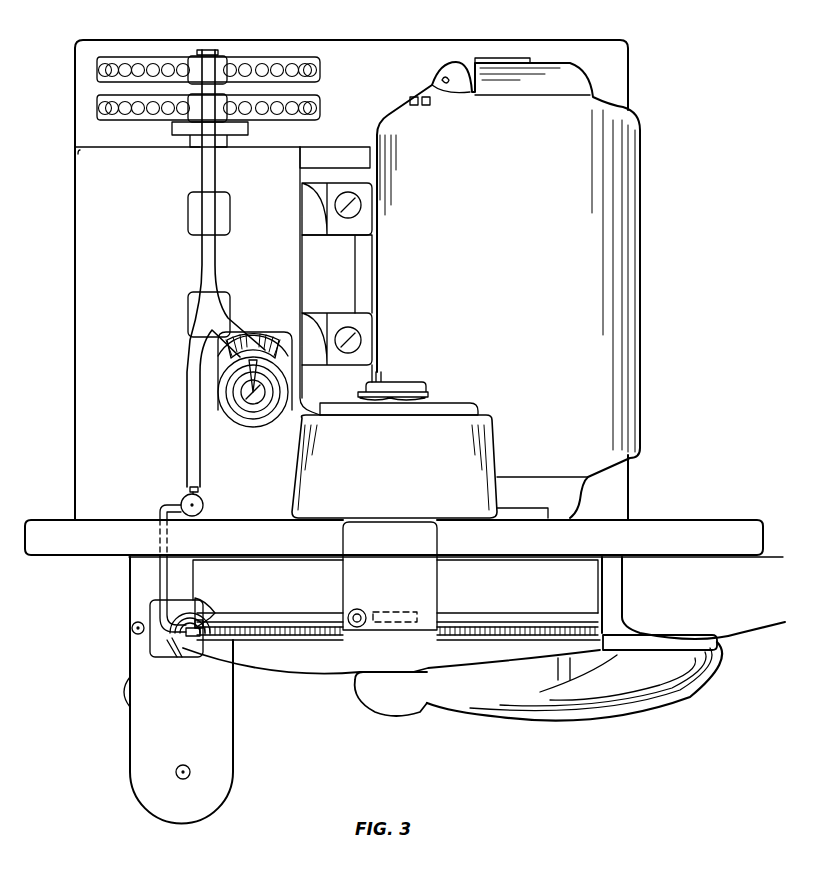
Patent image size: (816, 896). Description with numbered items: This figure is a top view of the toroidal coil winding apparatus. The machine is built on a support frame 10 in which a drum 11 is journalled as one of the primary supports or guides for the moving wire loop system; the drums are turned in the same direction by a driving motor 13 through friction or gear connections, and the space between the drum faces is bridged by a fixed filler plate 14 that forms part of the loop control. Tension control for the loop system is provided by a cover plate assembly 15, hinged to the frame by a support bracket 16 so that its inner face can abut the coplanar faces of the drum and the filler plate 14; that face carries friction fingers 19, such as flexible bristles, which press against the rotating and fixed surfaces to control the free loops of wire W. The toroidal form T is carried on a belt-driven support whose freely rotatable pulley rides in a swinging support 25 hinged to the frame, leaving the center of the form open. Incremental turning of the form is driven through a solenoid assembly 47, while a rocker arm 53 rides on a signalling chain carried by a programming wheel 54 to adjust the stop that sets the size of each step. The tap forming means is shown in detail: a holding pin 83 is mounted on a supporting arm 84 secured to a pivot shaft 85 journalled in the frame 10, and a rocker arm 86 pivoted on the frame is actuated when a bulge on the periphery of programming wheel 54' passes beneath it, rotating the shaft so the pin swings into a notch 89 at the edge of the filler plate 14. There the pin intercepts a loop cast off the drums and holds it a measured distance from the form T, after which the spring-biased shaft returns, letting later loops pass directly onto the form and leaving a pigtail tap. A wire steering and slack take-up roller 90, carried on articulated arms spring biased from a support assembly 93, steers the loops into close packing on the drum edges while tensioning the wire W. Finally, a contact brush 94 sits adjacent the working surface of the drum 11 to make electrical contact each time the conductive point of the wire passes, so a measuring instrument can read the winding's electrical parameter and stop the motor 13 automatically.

The support frame 10 is at (39, 528).
The drum 11 is at (300, 598).
The driving motor 13 is at (590, 231).
The filler plate 14 is at (195, 606).
The cover plate assembly 15 is at (325, 657).
The support bracket 16 is at (613, 678).
The fingers 19 is at (587, 633).
The swinging support 25 is at (150, 752).
The solenoid assembly 47 is at (345, 279).
The rocker arm 53 is at (232, 322).
The programming wheel 54 is at (181, 48).
The programming wheel 54' is at (175, 117).
The holding pin 83 is at (180, 632).
The supporting arm 84 is at (155, 573).
The pivot shaft 85 is at (204, 505).
The rocker arm 86 is at (183, 430).
The notch 89 is at (203, 658).
The wire steering and slack take-up roller 90 is at (610, 560).
The support assembly 93 is at (748, 607).
The contact brush 94 is at (387, 620).
The toroidal form T is at (198, 617).
The wire W is at (530, 622).